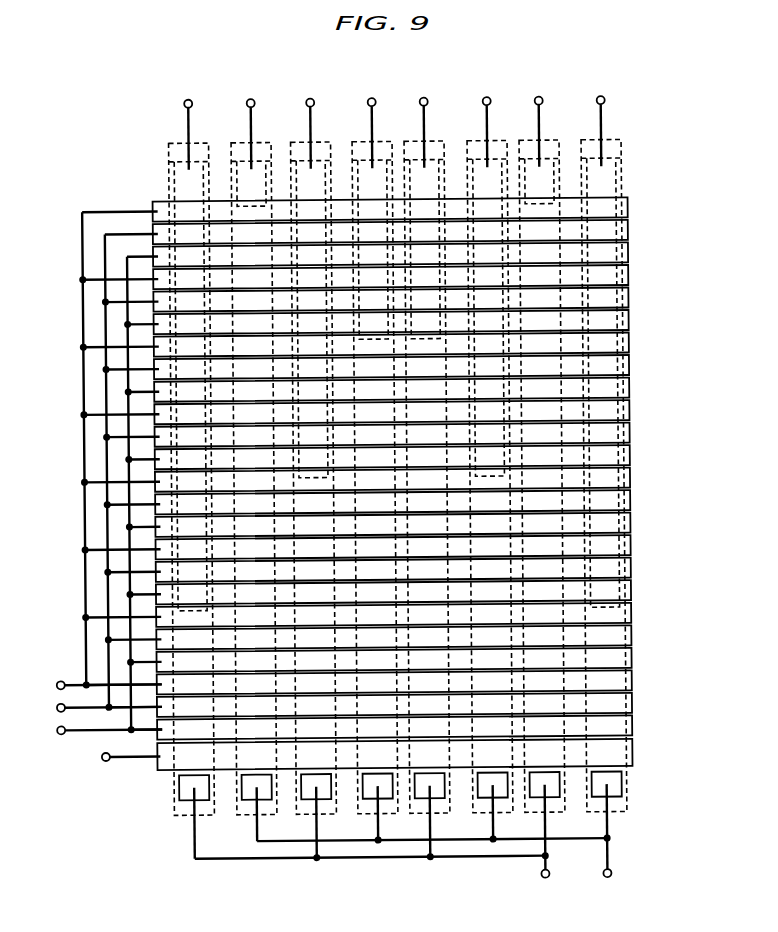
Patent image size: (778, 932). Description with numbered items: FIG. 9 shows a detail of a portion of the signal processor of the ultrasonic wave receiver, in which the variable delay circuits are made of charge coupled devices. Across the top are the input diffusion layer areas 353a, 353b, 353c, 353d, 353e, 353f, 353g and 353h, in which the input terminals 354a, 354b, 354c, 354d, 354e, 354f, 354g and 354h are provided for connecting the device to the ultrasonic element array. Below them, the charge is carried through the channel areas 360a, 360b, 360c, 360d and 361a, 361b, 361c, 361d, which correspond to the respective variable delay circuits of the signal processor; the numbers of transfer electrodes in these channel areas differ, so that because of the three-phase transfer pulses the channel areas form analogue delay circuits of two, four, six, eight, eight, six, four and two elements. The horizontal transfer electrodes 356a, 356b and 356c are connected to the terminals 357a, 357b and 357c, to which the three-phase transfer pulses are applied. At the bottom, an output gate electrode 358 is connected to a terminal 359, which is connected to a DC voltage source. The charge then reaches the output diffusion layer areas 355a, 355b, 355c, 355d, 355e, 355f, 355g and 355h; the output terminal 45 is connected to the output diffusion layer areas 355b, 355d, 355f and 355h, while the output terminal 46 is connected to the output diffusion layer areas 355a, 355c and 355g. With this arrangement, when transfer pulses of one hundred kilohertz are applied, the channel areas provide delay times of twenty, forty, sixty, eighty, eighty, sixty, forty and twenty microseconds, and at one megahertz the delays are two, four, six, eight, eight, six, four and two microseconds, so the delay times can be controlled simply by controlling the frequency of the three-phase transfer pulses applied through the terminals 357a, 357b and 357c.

The input diffusion layer area 353a is at (198, 181).
The input diffusion layer area 353b is at (261, 181).
The input diffusion layer area 353c is at (320, 181).
The input diffusion layer area 353d is at (382, 181).
The input diffusion layer area 353e is at (434, 181).
The input diffusion layer area 353f is at (497, 181).
The input diffusion layer area 353g is at (549, 181).
The input diffusion layer area 353h is at (611, 181).
The input terminal 354a is at (192, 98).
The input terminal 354b is at (254, 98).
The input terminal 354c is at (314, 98).
The input terminal 354d is at (375, 98).
The input terminal 354e is at (427, 98).
The input terminal 354f is at (490, 98).
The input terminal 354g is at (542, 98).
The input terminal 354h is at (604, 98).
The output diffusion layer area 355a is at (196, 790).
The output diffusion layer area 355b is at (259, 790).
The output diffusion layer area 355c is at (318, 790).
The output diffusion layer area 355d is at (380, 790).
The output diffusion layer area 355e is at (432, 790).
The output diffusion layer area 355f is at (495, 790).
The output diffusion layer area 355g is at (547, 790).
The output diffusion layer area 355h is at (609, 790).
The transfer electrode 356a is at (163, 208).
The transfer electrode 356b is at (164, 231).
The transfer electrode 356c is at (163, 254).
The terminal 357a is at (59, 686).
The terminal 357b is at (59, 709).
The terminal 357c is at (59, 732).
The output gate electrode 358 is at (171, 766).
The terminal 359 is at (104, 758).
The channel area 360a is at (195, 707).
The channel area 360b is at (314, 706).
The channel area 360c is at (430, 705).
The channel area 360d is at (544, 704).
The channel area 361a is at (255, 684).
The channel area 361b is at (379, 683).
The channel area 361c is at (494, 682).
The channel area 361d is at (607, 681).
The output terminal 45 is at (604, 879).
The output terminal 46 is at (542, 879).